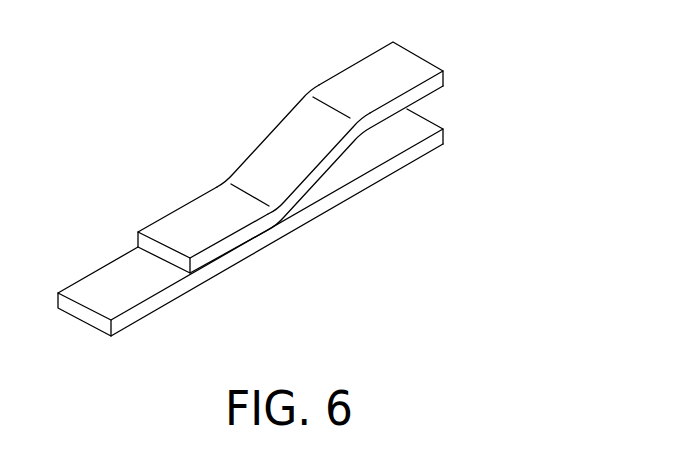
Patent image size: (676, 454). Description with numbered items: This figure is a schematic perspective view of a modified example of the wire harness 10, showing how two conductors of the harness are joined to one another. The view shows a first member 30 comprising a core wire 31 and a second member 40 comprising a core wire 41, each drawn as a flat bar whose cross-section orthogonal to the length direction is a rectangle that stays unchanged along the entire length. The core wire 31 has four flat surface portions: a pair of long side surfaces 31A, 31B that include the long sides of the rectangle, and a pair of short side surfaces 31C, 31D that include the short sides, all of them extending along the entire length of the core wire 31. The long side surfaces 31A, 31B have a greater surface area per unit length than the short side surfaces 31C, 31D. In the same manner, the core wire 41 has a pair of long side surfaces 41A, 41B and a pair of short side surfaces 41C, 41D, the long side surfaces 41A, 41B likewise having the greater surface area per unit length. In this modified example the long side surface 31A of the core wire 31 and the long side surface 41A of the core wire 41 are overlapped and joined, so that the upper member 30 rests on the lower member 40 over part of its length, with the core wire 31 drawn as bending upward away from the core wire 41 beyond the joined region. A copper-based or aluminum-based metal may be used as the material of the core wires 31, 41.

The wire harness 10 is at (140, 82).
The first bus bar member 30 is at (436, 65).
The core wire 31 is at (290, 175).
The long side surface 31A is at (235, 255).
The long side surface 31B is at (193, 213).
The short side surface 31C is at (265, 137).
The short side surface 31D is at (258, 231).
The second bus bar member 40 is at (437, 123).
The core wire 41 is at (242, 244).
The long side surface 41A is at (130, 260).
The long side surface 41B is at (152, 314).
The short side surface 41C is at (172, 296).
The short side surface 41D is at (70, 284).